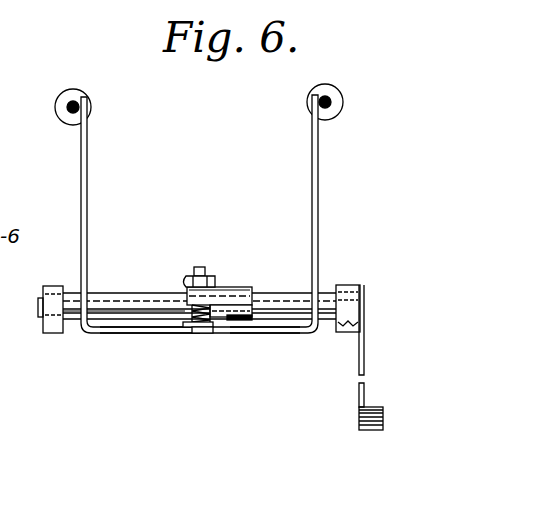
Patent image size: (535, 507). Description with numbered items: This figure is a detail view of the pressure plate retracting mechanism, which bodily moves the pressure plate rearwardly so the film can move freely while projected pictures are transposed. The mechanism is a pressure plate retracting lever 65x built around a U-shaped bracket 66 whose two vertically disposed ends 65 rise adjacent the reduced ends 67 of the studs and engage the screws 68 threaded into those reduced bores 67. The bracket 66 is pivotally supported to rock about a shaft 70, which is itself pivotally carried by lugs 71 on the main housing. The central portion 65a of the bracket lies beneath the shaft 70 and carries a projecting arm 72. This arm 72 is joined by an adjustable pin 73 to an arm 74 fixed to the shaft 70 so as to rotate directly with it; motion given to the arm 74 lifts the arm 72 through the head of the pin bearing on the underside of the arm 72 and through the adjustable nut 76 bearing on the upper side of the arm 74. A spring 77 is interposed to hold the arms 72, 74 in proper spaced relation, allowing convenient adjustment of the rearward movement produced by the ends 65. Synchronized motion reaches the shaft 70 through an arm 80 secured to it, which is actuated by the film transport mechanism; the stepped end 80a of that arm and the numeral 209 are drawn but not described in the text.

The reference from adjacent figure 209 is at (48, 8).
The screws 68 is at (73, 89).
The reduced ends 67 is at (67, 107).
The vertically disposed ends 65 is at (88, 186).
The central portion 65a is at (262, 333).
The pressure plate retracting lever 65x is at (247, 279).
The U-shaped bracket 66 is at (148, 333).
The shaft 70 is at (106, 300).
The lugs 71 is at (52, 331).
The projecting arm 72 is at (209, 334).
The adjustable pin 73 is at (195, 331).
The arm 74 is at (221, 288).
The adjustable nut 76 is at (185, 282).
The spring 77 is at (168, 309).
The arm 80 is at (359, 386).
The strip end block 80a is at (371, 430).